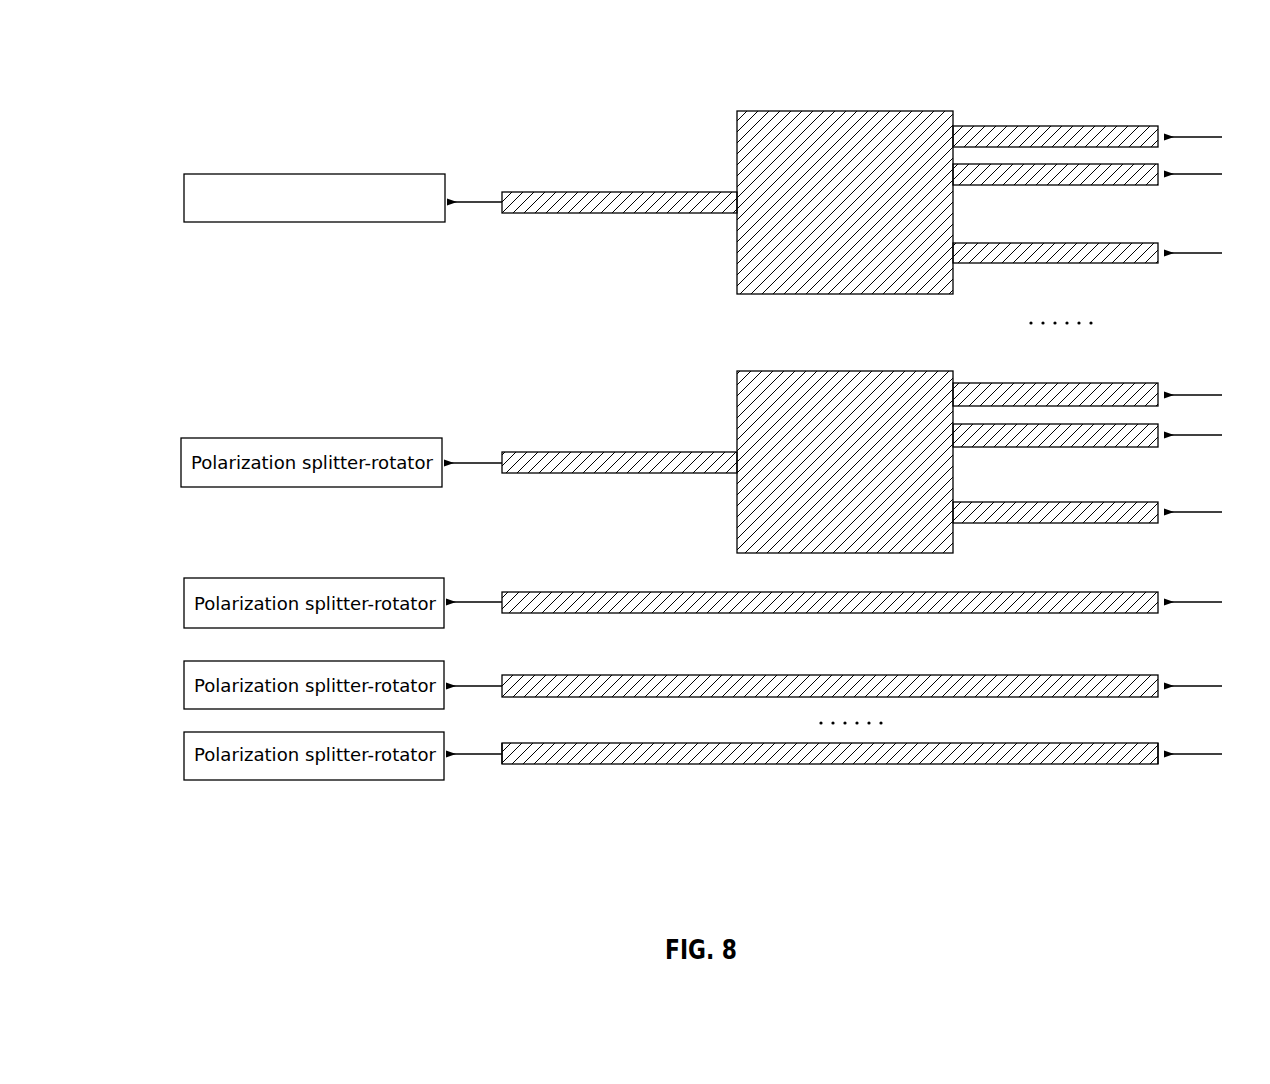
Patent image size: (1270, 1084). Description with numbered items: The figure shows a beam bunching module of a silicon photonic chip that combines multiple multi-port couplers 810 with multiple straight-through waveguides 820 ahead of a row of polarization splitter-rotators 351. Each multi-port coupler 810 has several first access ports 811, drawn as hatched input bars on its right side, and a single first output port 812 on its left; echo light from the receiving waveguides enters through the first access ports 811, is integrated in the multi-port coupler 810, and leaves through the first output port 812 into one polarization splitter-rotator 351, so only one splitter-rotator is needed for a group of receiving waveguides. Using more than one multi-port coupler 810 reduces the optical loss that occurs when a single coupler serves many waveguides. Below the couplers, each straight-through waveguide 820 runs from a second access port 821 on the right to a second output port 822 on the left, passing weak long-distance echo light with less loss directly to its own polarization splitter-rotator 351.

The polarization splitter-rotator 351 is at (325, 173).
The multi-port coupler 810 is at (838, 155).
The first access port 811 is at (1133, 143).
The first output port 812 is at (571, 200).
The straight-through waveguide 820 is at (847, 750).
The second access port 821 is at (1158, 765).
The second output port 822 is at (502, 765).